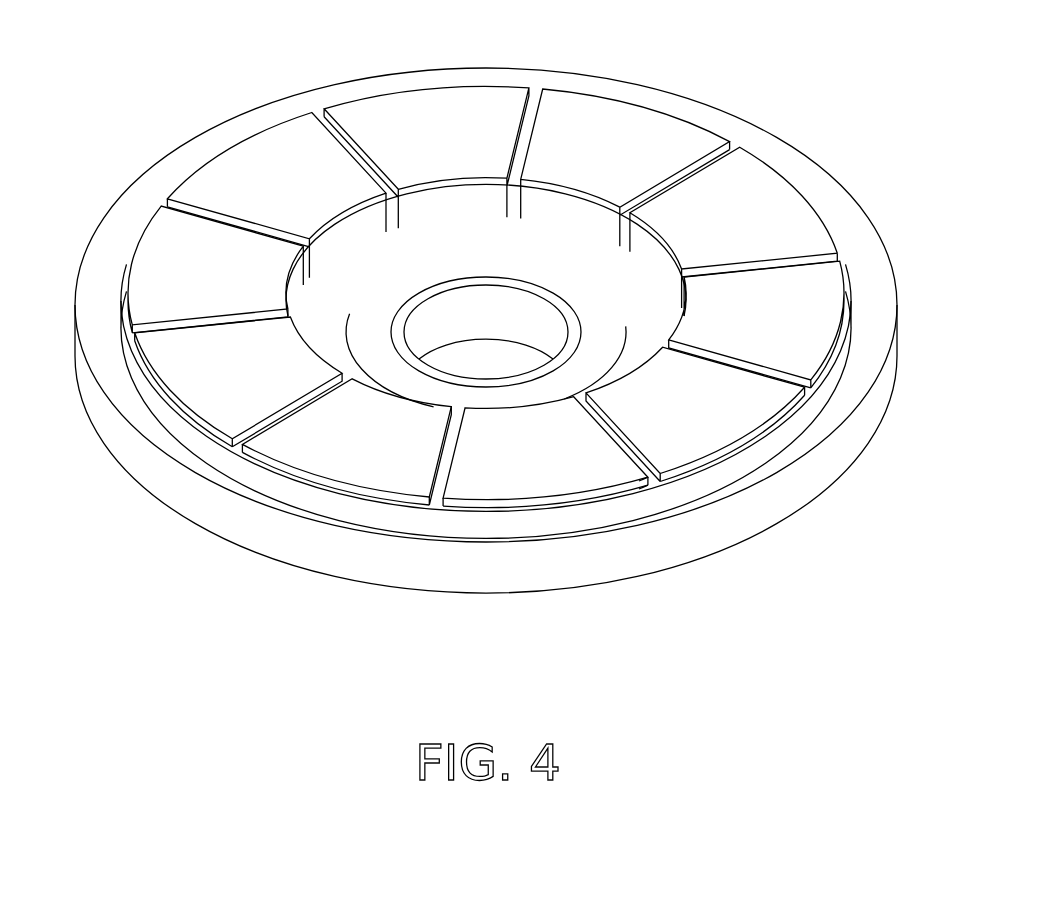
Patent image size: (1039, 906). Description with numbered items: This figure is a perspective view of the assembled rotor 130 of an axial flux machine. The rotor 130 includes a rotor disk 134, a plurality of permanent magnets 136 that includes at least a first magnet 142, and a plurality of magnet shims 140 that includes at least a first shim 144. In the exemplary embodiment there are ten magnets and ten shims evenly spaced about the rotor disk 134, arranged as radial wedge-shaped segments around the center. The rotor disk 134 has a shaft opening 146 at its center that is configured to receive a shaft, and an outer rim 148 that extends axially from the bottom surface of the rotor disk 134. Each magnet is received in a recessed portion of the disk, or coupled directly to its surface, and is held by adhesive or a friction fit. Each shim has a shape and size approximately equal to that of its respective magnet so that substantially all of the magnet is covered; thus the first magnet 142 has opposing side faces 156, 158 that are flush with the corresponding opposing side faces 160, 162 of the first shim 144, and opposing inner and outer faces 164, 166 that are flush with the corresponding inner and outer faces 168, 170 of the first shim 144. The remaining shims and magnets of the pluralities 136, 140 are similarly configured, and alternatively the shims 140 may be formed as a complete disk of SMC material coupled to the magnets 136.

The rotor 130 is at (543, 366).
The rotor disk 134 is at (313, 547).
The plurality of permanent magnets 136 is at (789, 435).
The plurality of magnet shims 140 is at (519, 382).
The first magnet 142 is at (574, 505).
The first shim 144 is at (477, 435).
The shaft opening 146 is at (460, 369).
The outer rim 148 is at (924, 116).
The side face 156 is at (432, 510).
The side face 158 is at (647, 487).
The side face 160 is at (440, 500).
The side face 162 is at (660, 487).
The inner face 164 is at (626, 326).
The outer face 166 is at (493, 510).
The inner face 168 is at (350, 314).
The outer face 170 is at (533, 507).